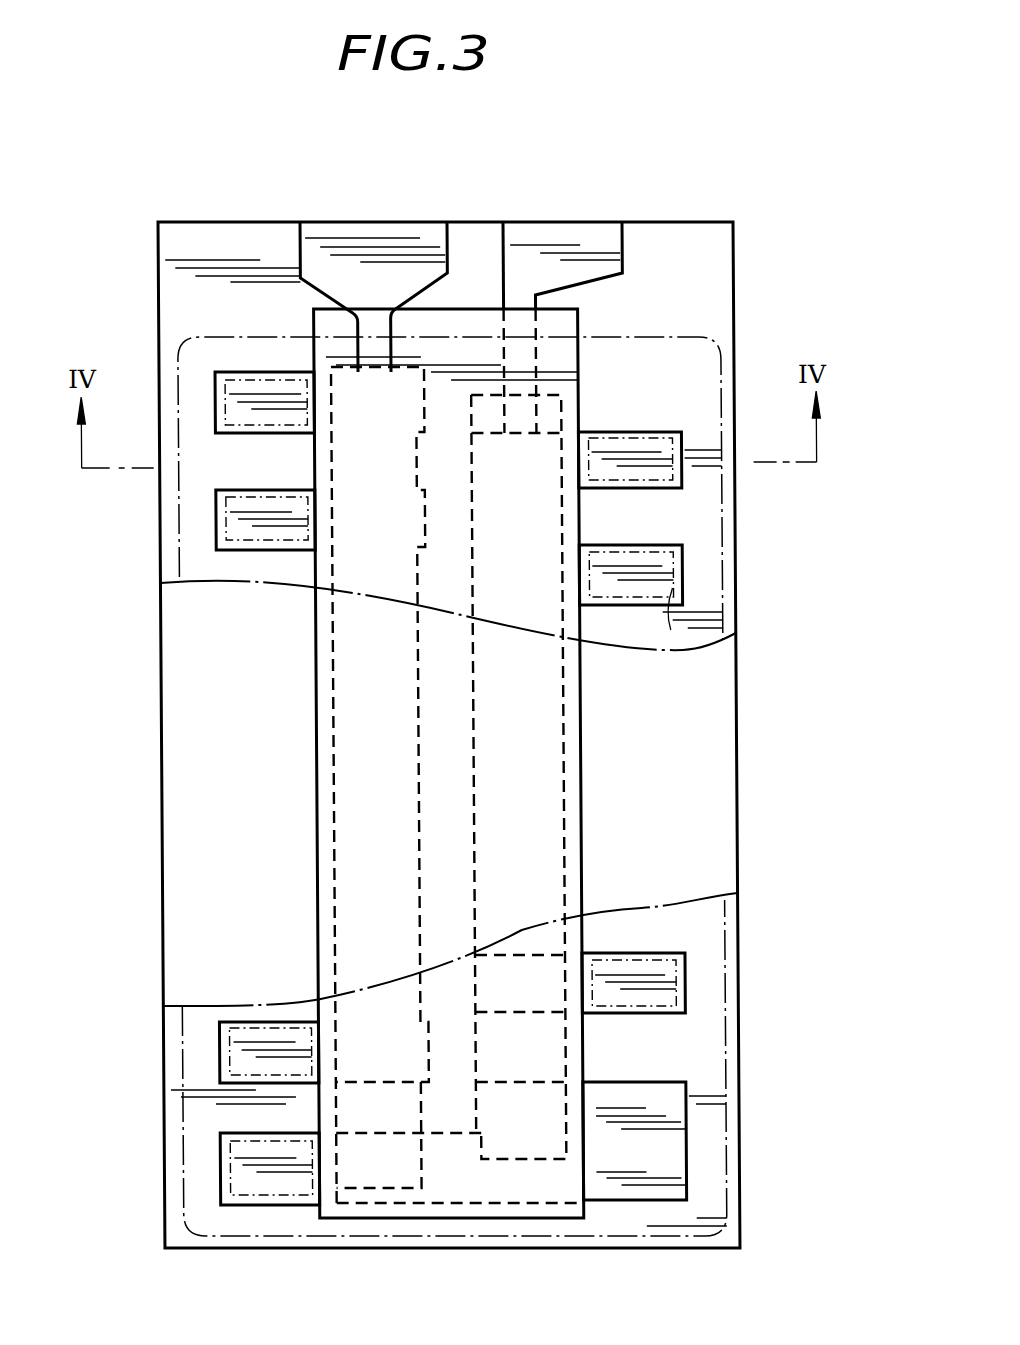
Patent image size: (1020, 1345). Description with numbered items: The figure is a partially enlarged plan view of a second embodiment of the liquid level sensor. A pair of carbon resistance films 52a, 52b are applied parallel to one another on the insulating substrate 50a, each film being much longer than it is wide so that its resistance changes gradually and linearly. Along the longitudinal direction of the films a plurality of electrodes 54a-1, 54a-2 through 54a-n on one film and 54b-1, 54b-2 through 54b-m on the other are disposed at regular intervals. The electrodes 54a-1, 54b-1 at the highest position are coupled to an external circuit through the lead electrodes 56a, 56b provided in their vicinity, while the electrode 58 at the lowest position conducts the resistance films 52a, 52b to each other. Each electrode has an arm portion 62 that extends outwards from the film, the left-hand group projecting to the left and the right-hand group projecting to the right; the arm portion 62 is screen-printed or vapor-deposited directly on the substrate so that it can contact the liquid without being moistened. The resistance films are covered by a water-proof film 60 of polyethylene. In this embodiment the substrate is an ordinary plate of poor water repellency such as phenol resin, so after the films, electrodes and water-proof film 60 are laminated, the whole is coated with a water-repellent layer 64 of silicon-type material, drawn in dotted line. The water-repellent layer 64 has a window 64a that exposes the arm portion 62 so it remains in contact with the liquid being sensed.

The insulating substrate 50a is at (158, 514).
The resistance film 52a is at (352, 782).
The resistance film 52b is at (543, 845).
The electrode 54a-1 is at (296, 366).
The electrode 54a-2 is at (277, 490).
The electrode 54a-n is at (218, 1055).
The electrode 54b-1 is at (627, 431).
The electrode 54b-2 is at (622, 545).
The electrode 54b-m is at (680, 1014).
The lead electrode 56a is at (365, 240).
The lead electrode 56b is at (565, 238).
The electrode 58 is at (625, 1203).
The water-proof film 60 is at (566, 328).
The arm portion 62 is at (230, 372).
The water-repellent layer 64 is at (703, 335).
The window 64a is at (672, 630).